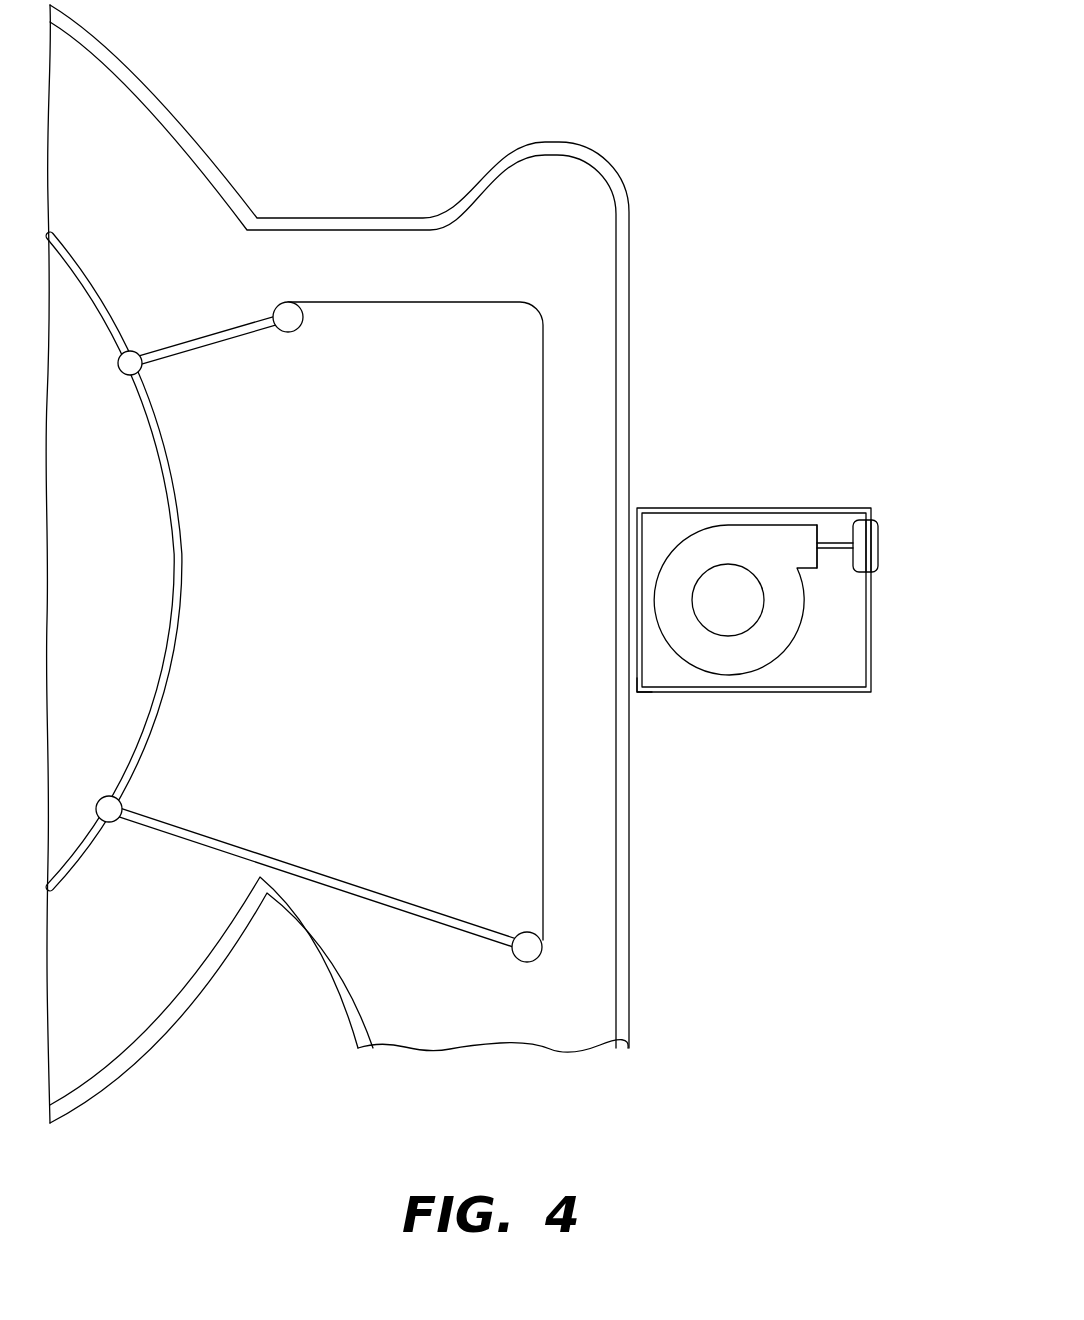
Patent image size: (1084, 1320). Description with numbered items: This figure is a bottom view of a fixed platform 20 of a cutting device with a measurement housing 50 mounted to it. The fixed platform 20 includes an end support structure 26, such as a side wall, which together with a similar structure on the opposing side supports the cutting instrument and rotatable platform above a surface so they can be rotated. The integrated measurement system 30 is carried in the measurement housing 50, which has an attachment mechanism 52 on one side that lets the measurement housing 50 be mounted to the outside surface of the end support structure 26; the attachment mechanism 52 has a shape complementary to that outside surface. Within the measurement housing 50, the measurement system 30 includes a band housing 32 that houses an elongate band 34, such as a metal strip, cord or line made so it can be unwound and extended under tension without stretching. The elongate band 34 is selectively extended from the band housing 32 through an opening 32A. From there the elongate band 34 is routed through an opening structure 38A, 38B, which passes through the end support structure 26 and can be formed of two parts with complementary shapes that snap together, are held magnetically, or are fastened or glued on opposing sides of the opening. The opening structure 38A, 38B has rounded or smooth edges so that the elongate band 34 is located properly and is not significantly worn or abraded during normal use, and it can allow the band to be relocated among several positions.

The fixed platform 20 is at (380, 601).
The end support structure 26 is at (564, 643).
The integrated measurement system 30 is at (795, 542).
The band housing 32 is at (728, 525).
The opening 32A is at (820, 543).
The elongate band 34 is at (838, 552).
The opening structure 38A is at (858, 532).
The opening structure 38B is at (873, 559).
The measurement housing 50 is at (752, 692).
The attachment mechanism 52 is at (638, 693).